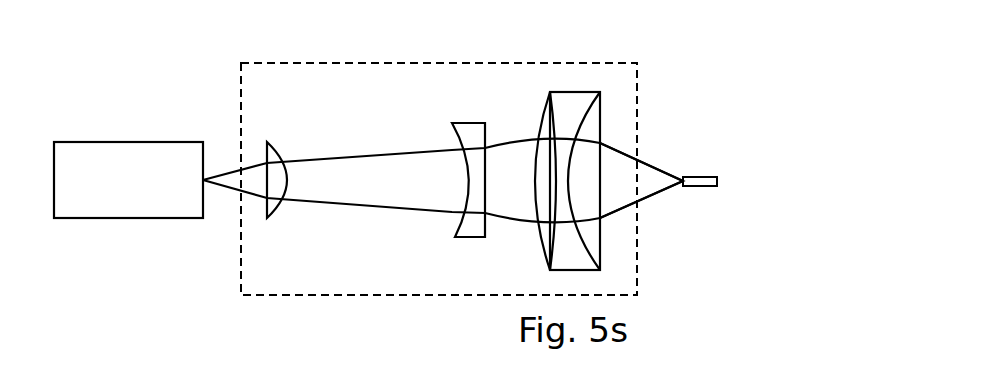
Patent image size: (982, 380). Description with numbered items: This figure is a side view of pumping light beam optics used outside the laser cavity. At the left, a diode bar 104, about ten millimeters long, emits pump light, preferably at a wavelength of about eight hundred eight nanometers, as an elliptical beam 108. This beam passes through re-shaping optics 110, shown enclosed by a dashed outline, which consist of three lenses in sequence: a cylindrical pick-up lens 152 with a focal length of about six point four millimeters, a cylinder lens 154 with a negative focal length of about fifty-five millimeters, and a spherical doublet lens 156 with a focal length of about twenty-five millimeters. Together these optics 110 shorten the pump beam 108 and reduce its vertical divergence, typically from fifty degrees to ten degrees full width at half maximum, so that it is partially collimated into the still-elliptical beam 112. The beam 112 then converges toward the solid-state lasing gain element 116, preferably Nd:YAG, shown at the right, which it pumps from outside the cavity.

The diode bar 104 is at (171, 166).
The elliptical beam 108 is at (232, 192).
The re-shaping optics 110 is at (343, 103).
The partially collimated beam 112 is at (657, 192).
The solid-state lasing gain element 116 is at (708, 187).
The cylindrical pick-up lens 152 is at (276, 207).
The cylinder lens 154 is at (455, 234).
The spherical doublet lens 156 is at (517, 89).